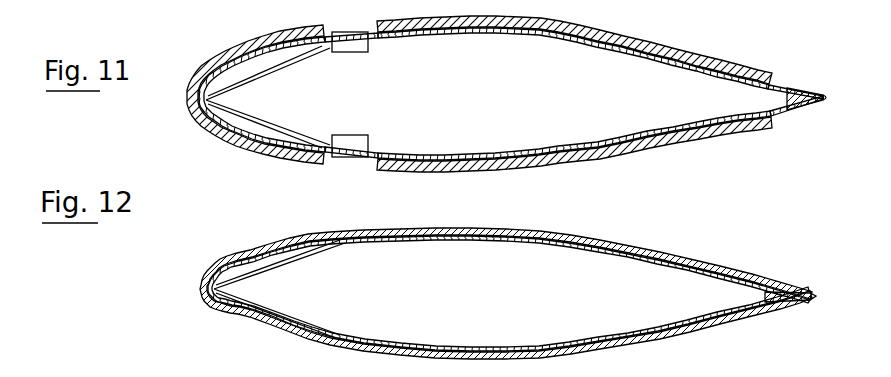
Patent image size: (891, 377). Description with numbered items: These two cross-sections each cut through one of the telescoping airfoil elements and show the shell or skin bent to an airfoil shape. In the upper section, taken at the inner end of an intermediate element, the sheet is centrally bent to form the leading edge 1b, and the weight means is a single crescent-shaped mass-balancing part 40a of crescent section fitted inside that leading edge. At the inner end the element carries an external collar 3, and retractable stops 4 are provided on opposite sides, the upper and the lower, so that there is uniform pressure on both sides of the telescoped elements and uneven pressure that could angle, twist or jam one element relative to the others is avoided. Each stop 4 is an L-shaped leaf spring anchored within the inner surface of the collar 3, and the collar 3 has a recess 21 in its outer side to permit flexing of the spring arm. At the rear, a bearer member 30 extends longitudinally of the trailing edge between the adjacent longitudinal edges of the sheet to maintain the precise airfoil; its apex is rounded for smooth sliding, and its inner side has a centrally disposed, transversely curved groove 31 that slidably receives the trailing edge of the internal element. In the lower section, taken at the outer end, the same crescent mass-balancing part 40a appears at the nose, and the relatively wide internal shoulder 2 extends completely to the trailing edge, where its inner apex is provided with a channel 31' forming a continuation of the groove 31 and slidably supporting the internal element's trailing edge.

In FIG. 11, the mass-balancing part 40a is at (193, 107).
In FIG. 12, the mass-balancing part 40a is at (220, 289).
In FIG. 11, the leading edge 1b is at (595, 47).
In FIG. 11, the external collar 3 is at (548, 26).
In FIG. 11, the recess 21 is at (355, 160).
In FIG. 11, the retractable stop 4 is at (362, 143).
In FIG. 11, the groove 31 is at (771, 100).
In FIG. 11, the bearer member 30 is at (827, 97).
In FIG. 12, the internal shoulder 2 is at (558, 250).
In FIG. 12, the channel 31' is at (758, 297).